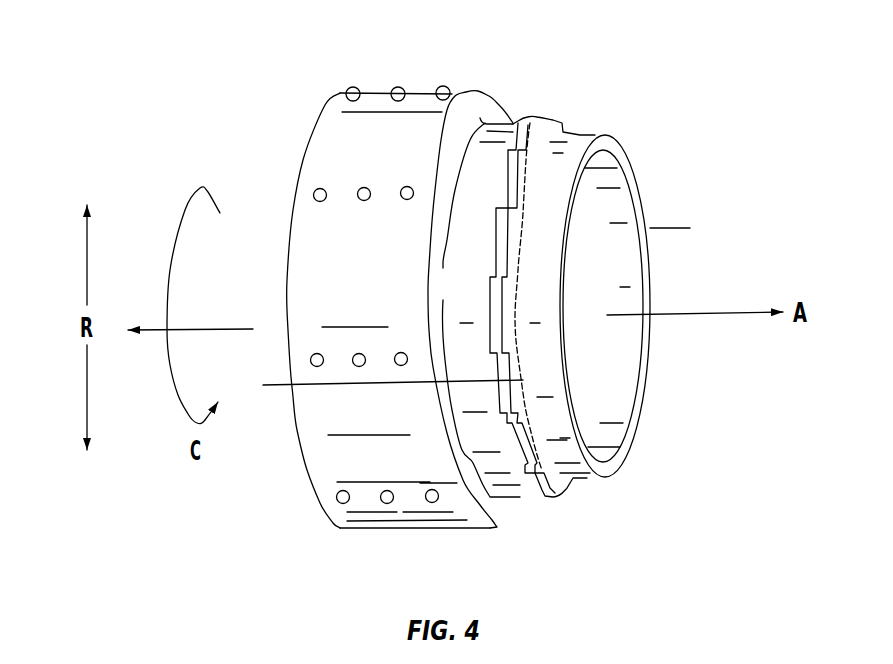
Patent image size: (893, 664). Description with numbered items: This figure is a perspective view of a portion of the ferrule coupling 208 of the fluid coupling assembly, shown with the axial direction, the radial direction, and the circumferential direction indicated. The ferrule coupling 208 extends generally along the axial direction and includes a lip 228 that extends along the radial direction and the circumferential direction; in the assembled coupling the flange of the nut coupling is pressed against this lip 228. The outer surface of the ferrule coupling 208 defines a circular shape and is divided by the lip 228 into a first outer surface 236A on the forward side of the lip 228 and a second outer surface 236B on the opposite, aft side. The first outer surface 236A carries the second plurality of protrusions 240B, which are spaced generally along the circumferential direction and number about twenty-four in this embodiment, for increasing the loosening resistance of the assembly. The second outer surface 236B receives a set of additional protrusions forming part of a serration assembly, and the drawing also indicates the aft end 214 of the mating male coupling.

The ferrule coupling 208 is at (453, 301).
The aft end 214 is at (268, 454).
The lip 228 is at (503, 509).
The first outer surface 236A is at (330, 266).
The second outer surface 236B is at (536, 118).
The second plurality of protrusions 240B is at (364, 190).